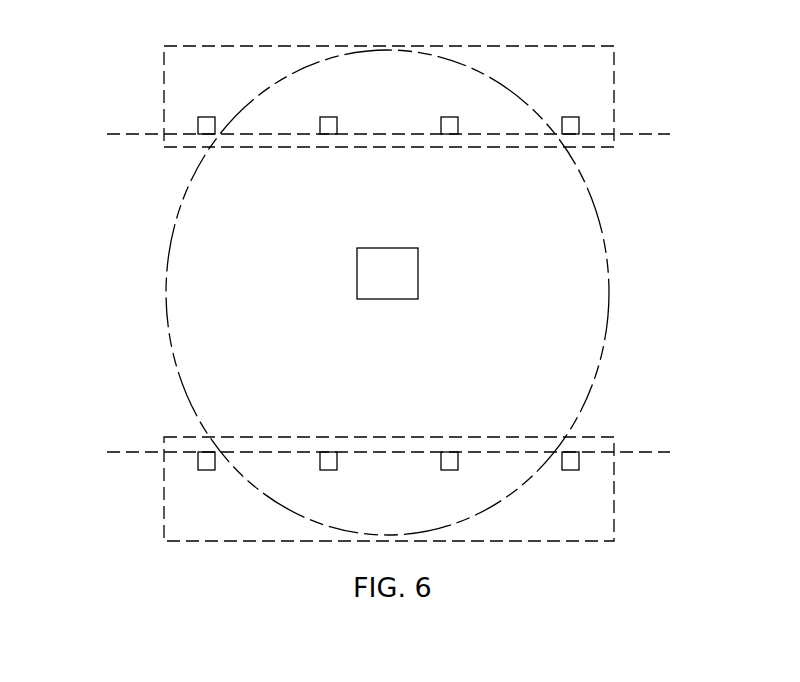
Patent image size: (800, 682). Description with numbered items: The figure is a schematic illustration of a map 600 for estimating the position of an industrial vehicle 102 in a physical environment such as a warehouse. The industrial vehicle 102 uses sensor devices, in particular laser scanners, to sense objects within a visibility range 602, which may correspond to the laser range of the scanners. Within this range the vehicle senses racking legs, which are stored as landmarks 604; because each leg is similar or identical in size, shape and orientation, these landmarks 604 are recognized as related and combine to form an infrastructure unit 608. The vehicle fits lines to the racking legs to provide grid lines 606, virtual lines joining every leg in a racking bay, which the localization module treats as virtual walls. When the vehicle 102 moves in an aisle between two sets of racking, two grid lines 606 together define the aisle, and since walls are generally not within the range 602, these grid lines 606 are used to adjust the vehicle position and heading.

The map 600 is at (787, 40).
The visibility range 602 is at (504, 501).
The landmarks 604 is at (205, 115).
The grid lines 606 is at (661, 135).
The infrastructure unit 608 is at (164, 65).
The industrial vehicle 102 is at (387, 247).